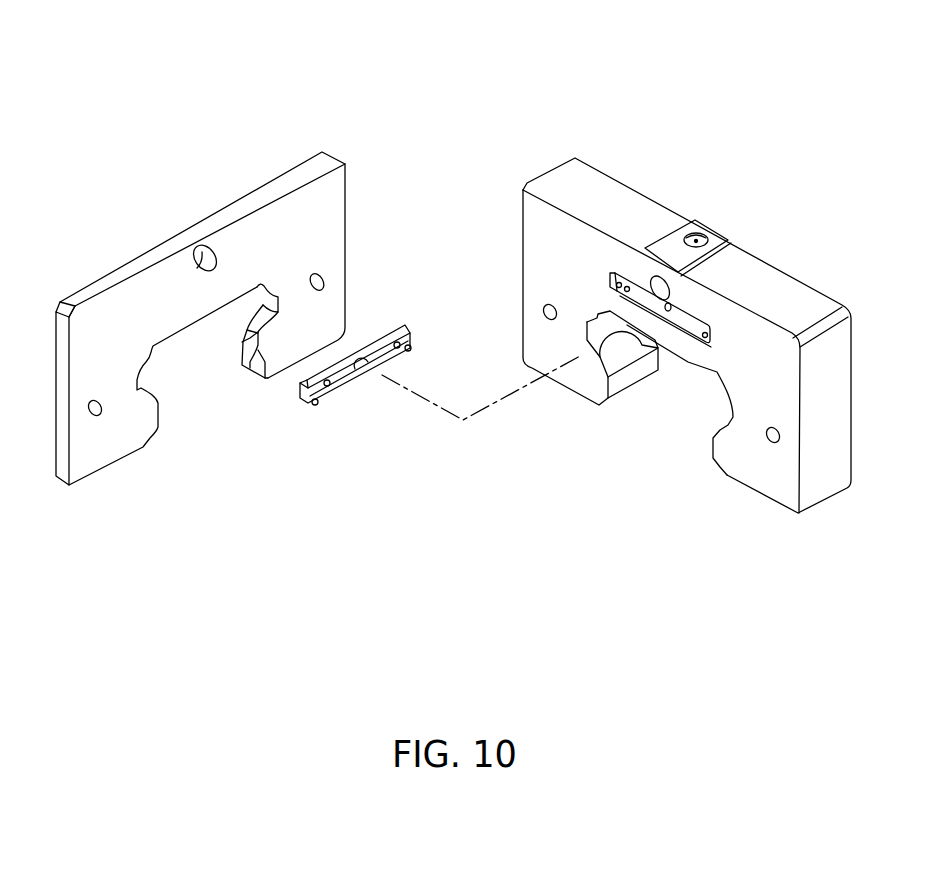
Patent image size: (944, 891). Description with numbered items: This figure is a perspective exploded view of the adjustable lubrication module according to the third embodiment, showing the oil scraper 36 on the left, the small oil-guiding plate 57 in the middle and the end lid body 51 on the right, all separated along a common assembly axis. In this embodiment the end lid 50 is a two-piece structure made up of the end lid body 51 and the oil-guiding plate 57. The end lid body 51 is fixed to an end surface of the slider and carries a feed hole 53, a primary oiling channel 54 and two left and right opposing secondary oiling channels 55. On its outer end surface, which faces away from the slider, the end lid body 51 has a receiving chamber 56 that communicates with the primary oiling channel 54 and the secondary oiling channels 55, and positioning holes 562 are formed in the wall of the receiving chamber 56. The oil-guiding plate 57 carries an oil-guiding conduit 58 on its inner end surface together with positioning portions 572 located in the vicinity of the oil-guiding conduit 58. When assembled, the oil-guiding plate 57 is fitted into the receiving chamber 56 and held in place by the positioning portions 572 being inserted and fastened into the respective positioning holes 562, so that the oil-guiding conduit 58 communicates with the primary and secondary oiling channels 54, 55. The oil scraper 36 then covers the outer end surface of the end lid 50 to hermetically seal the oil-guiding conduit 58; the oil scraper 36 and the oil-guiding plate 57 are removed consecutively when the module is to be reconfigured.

The oil scraper 36 is at (274, 152).
The end lid 50 is at (555, 67).
The end lid body 51 is at (546, 146).
The feed hole 53 is at (662, 280).
The primary oiling channel 54 is at (667, 311).
The secondary oiling channels 55 is at (623, 296).
The receiving chamber 56 is at (695, 330).
The positioning holes 562 is at (621, 284).
The oil-guiding plate 57 is at (405, 292).
The oil-guiding conduit 58 is at (348, 386).
The positioning portions 572 is at (412, 349).